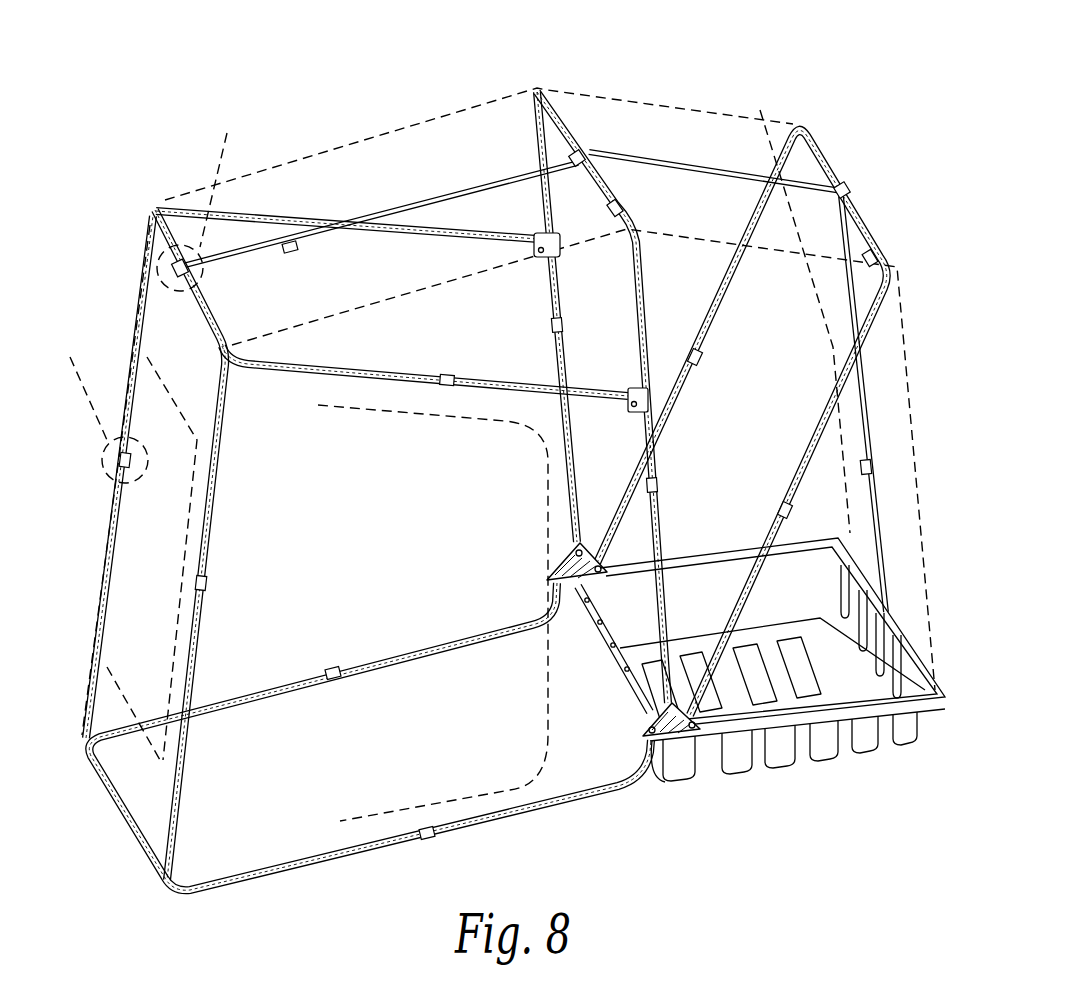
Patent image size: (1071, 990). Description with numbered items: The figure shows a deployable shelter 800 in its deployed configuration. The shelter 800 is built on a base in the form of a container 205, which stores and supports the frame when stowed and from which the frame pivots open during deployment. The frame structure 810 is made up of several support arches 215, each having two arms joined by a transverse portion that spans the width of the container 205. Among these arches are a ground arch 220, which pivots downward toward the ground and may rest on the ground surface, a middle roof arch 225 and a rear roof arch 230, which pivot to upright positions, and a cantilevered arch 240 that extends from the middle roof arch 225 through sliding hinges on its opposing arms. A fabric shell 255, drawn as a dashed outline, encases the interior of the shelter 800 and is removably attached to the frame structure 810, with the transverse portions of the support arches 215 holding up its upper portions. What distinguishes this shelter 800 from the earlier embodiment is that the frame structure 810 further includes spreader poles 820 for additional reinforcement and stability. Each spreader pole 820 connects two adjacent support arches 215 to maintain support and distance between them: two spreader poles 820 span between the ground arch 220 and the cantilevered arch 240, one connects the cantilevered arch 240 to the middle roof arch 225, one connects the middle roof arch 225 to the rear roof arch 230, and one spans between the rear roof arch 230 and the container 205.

The deployable shelter 800 is at (108, 127).
The frame structure 810 is at (677, 70).
The fabric shell 255 is at (350, 135).
The support arches 215 is at (476, 454).
The ground arch 220 is at (113, 810).
The middle roof arch 225 is at (563, 124).
The rear roof arch 230 is at (833, 188).
The cantilevered arch 240 is at (216, 314).
The spreader poles 820 is at (418, 204).
The container 205 is at (740, 773).